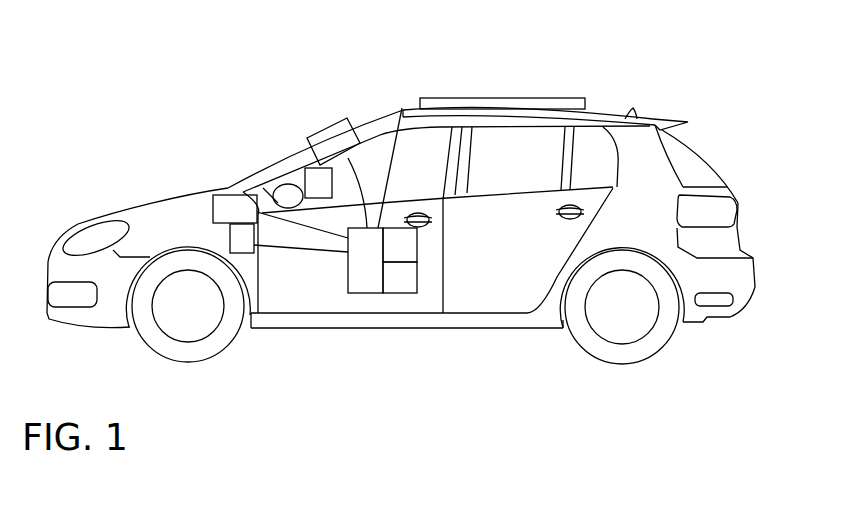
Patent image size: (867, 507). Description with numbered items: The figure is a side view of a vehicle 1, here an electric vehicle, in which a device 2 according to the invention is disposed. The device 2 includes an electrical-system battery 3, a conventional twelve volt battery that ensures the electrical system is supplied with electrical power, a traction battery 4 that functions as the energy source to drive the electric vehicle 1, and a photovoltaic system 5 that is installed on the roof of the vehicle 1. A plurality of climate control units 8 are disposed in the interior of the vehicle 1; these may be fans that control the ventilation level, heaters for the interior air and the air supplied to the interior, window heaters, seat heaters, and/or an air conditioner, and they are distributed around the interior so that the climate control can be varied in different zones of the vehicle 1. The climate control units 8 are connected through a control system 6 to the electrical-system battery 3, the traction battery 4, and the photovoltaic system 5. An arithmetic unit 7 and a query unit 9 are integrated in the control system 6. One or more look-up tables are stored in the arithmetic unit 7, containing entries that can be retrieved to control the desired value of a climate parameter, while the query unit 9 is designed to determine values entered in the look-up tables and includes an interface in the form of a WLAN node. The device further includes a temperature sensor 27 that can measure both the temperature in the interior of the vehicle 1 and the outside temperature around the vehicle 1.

The vehicle 1 is at (765, 207).
The device 2 is at (343, 300).
The electrical-system battery 3 is at (243, 219).
The traction battery 4 is at (250, 250).
The photovoltaic system 5 is at (543, 104).
The control system 6 is at (374, 270).
The arithmetic unit 7 is at (408, 255).
The climate control units 8 is at (326, 193).
The query unit 9 is at (408, 289).
The temperature sensor 27 is at (332, 150).